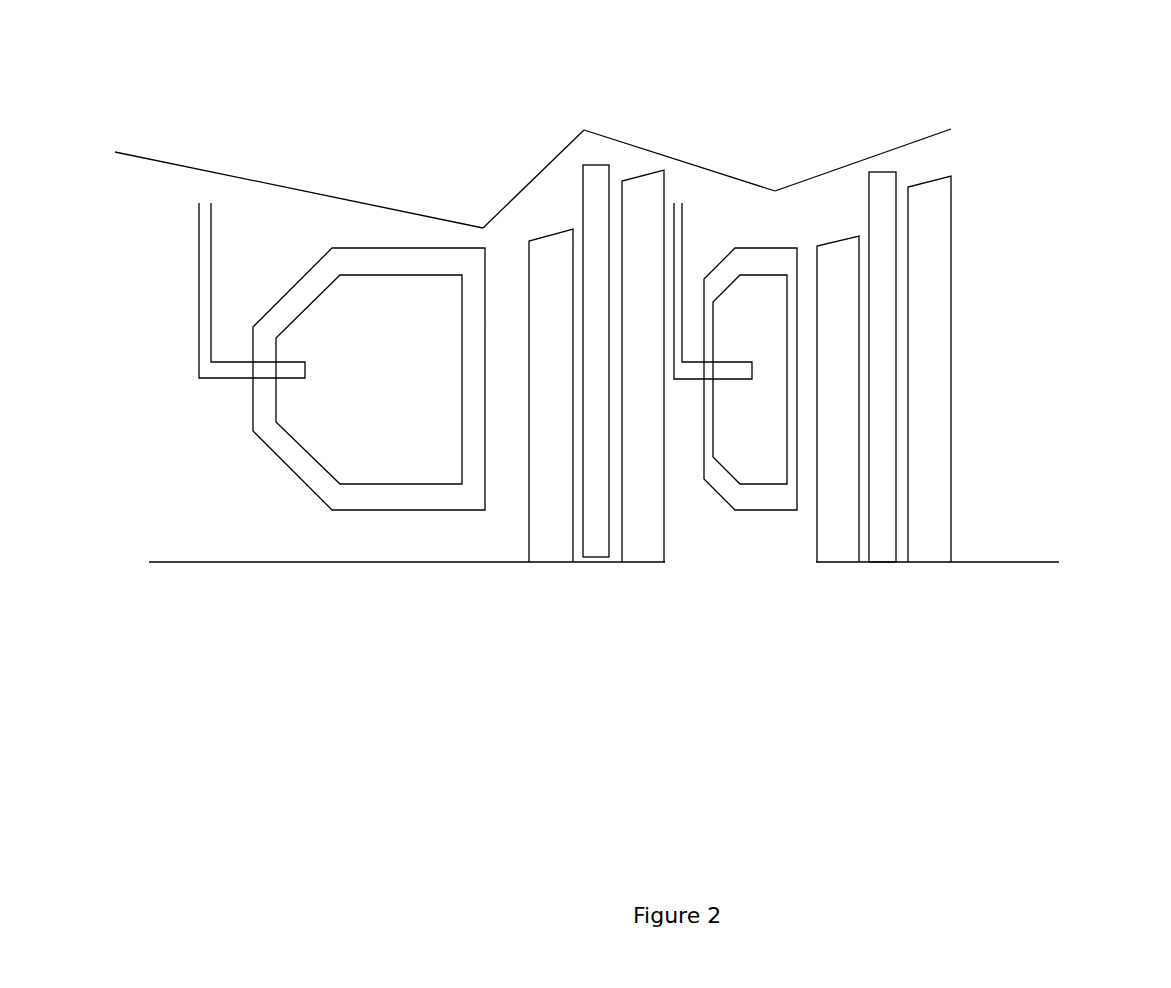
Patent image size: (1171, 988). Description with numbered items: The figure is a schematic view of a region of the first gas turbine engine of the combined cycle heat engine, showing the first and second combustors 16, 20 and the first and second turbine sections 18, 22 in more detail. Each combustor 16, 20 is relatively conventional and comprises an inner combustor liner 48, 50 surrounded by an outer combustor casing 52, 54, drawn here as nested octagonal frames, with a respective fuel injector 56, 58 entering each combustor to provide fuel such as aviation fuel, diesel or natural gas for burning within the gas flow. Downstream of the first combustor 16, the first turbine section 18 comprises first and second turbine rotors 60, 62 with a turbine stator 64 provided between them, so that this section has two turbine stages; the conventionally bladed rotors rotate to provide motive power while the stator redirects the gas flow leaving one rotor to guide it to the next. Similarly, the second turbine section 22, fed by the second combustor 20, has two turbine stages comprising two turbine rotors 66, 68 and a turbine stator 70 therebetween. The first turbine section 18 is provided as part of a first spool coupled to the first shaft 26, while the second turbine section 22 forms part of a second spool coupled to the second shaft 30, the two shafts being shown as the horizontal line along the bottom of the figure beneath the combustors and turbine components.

The first combustor 16 is at (306, 203).
The first turbine section 18 is at (552, 127).
The second combustor 20 is at (716, 203).
The second turbine section 22 is at (858, 128).
The first shaft 26 is at (282, 566).
The second shaft 30 is at (1004, 563).
The inner combustor liner 48 is at (369, 484).
The inner combustor liner 50 is at (768, 485).
The outer combustor casing 52 is at (443, 510).
The outer combustor casing 54 is at (749, 512).
The fuel injector 56 is at (211, 378).
The fuel injector 58 is at (715, 362).
The first turbine rotor 60 is at (551, 529).
The second turbine rotor 62 is at (647, 512).
The turbine stator 64 is at (597, 530).
The turbine rotor 66 is at (837, 530).
The turbine rotor 68 is at (937, 407).
The turbine stator 70 is at (883, 329).